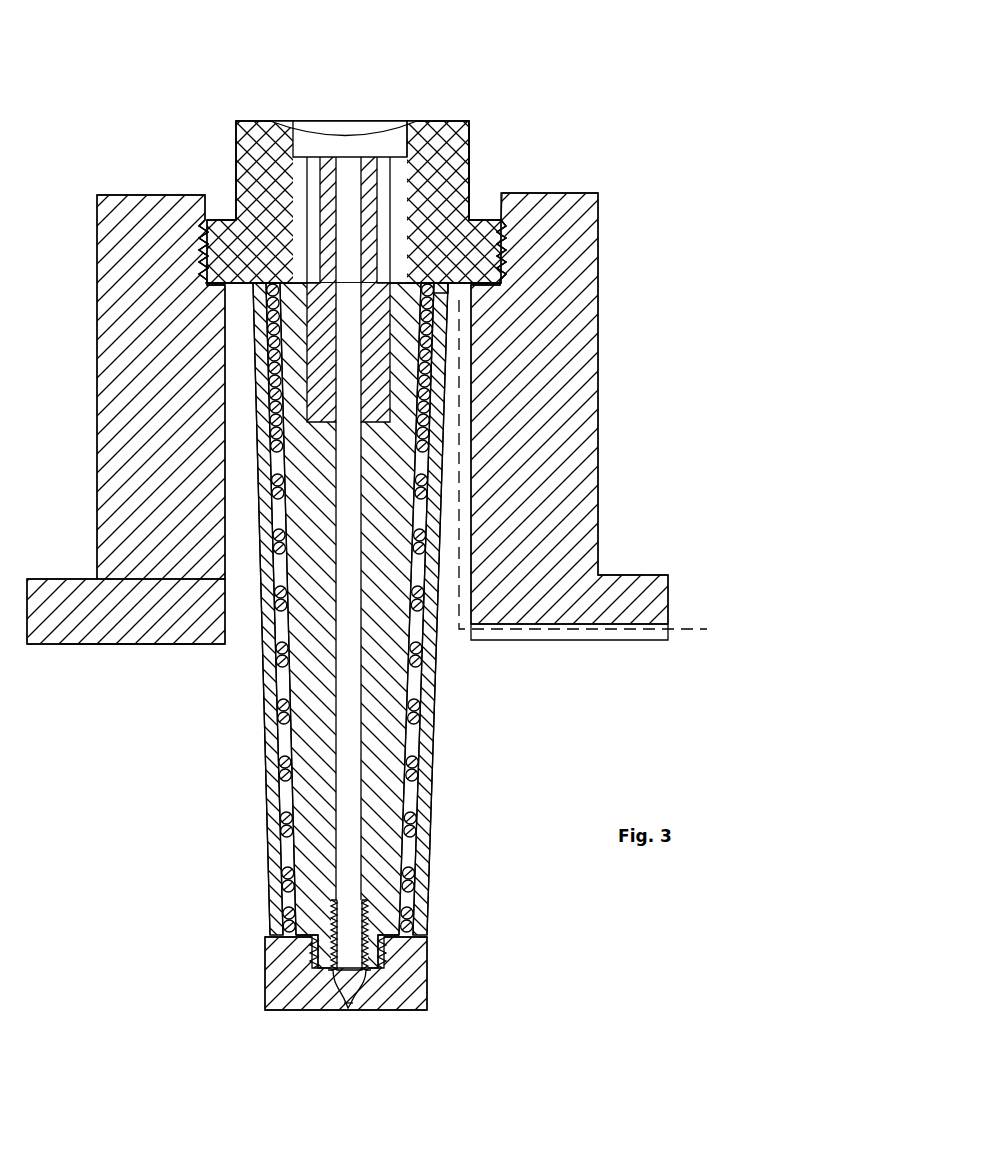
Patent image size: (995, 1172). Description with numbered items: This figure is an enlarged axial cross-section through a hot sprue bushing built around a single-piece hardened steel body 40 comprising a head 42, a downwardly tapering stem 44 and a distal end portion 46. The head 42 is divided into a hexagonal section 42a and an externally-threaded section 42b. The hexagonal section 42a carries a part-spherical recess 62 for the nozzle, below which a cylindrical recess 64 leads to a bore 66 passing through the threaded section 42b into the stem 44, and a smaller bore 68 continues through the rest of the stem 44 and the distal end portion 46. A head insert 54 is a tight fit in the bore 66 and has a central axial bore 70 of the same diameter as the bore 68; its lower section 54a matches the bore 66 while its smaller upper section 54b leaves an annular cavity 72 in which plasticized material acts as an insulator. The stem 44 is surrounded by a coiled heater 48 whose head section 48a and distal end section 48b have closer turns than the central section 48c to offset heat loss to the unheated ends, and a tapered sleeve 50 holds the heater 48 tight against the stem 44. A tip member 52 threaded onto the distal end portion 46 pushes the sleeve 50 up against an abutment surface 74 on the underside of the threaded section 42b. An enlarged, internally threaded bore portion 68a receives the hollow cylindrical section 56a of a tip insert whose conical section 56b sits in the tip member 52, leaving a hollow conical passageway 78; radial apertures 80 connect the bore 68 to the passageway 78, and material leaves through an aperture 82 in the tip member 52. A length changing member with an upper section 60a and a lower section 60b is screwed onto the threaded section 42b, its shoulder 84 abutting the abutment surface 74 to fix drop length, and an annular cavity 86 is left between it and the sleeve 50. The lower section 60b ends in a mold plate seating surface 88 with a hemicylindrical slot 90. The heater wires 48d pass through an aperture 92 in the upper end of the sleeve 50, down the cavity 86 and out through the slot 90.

The body 40 is at (410, 496).
The head 42 is at (468, 179).
The hexagonal section 42a is at (437, 162).
The threaded section 42b is at (505, 228).
The stem 44 is at (310, 770).
The distal end portion 46 is at (318, 845).
The heater 48 is at (590, 562).
The head section 48a is at (431, 362).
The distal end section 48b is at (410, 905).
The central section 48c is at (425, 540).
The wires 48d is at (688, 628).
The sleeve 50 is at (434, 717).
The tip member 52 is at (400, 940).
The head insert 54 is at (440, 191).
The lower section 54a is at (205, 235).
The upper section 54b is at (323, 250).
The hollow cylindrical section 56a is at (320, 910).
The conical section 56b is at (322, 975).
The upper section 60a is at (140, 250).
The lower section 60b is at (138, 612).
The part-spherical recess 62 is at (332, 122).
The cylindrical recess 64 is at (390, 145).
The bore 66 is at (410, 132).
The bore 68 is at (365, 845).
The bore portion 68a is at (372, 910).
The central axial bore 70 is at (347, 200).
The annular cavity 72 is at (316, 192).
The abutment surface 74 is at (490, 285).
The passageway 78 is at (335, 996).
The apertures 80 is at (385, 976).
The aperture 82 is at (356, 1006).
The shoulder 84 is at (215, 290).
The annular cylindrical cavity 86 is at (245, 437).
The mold plate seating surface 88 is at (185, 645).
The slot 90 is at (545, 636).
The aperture 92 is at (445, 310).